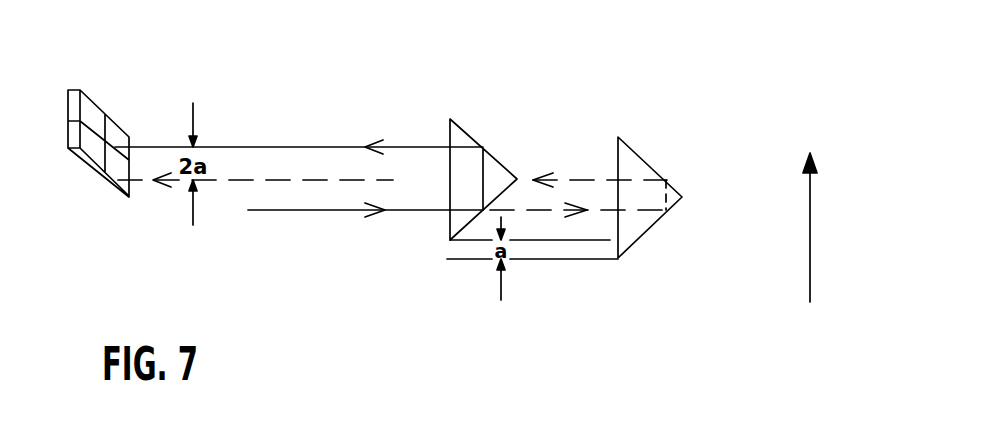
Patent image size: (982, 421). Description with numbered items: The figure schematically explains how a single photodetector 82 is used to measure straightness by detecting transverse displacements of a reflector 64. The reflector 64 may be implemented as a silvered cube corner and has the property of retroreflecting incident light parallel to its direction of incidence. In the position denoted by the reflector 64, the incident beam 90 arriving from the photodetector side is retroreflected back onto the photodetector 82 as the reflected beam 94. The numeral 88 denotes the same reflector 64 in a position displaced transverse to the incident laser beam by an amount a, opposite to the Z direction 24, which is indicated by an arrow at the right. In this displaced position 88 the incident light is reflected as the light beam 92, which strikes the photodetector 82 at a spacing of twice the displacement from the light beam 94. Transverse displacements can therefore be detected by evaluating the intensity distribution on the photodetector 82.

The photodetector 82 is at (118, 108).
The reflected beam 94 is at (286, 147).
The incident beam 90 is at (395, 212).
The reflector 64 is at (485, 150).
The light beam 92 is at (581, 180).
The displaced reflector position 88 is at (673, 157).
The Z direction 24 is at (810, 228).